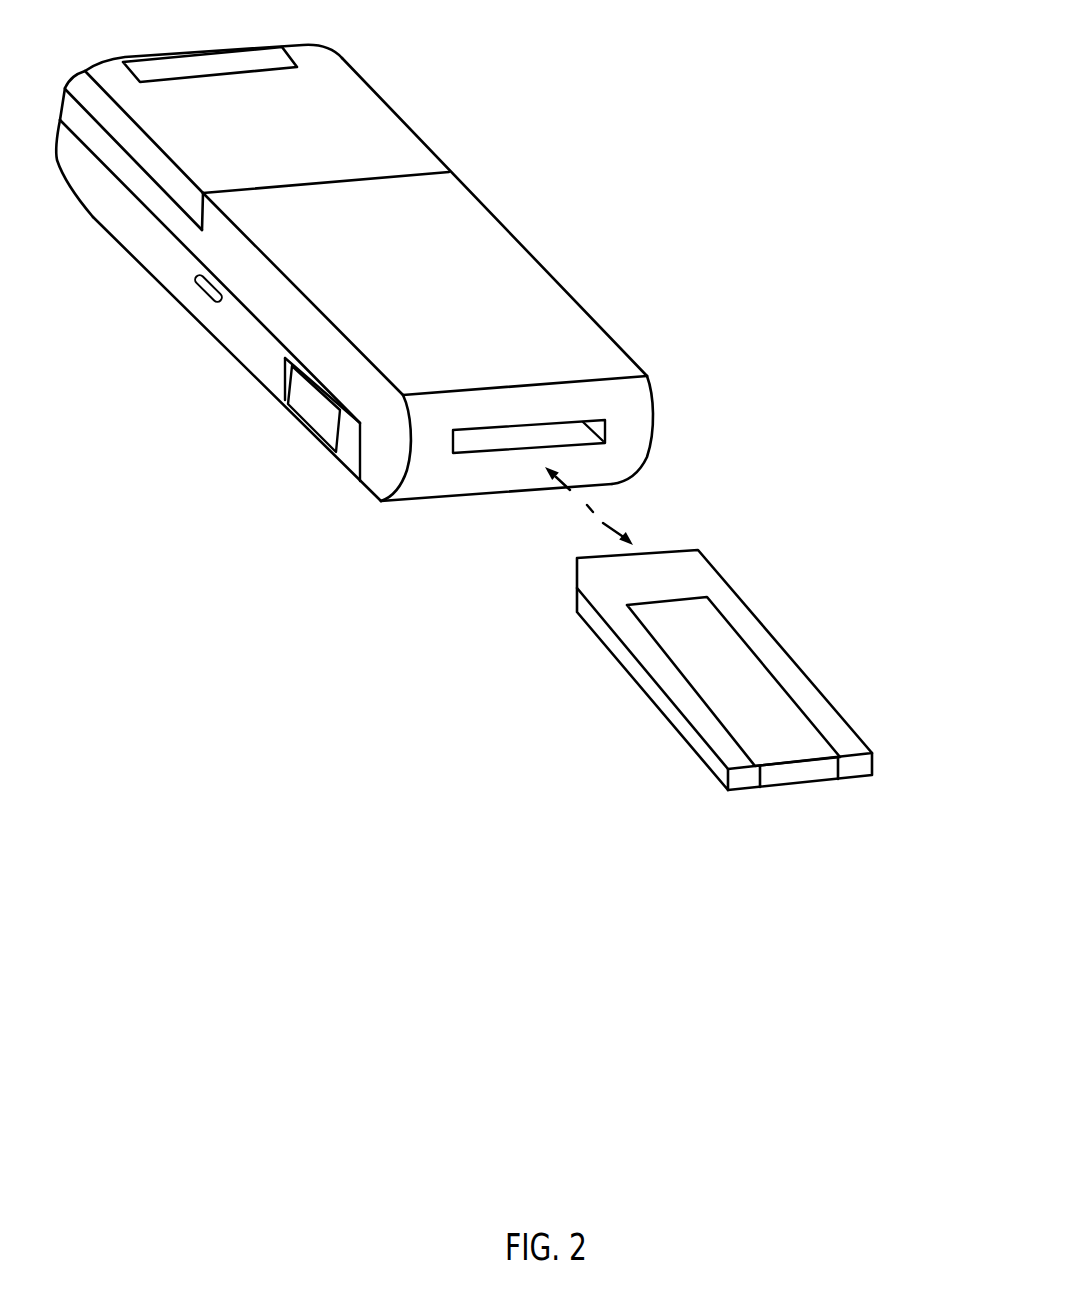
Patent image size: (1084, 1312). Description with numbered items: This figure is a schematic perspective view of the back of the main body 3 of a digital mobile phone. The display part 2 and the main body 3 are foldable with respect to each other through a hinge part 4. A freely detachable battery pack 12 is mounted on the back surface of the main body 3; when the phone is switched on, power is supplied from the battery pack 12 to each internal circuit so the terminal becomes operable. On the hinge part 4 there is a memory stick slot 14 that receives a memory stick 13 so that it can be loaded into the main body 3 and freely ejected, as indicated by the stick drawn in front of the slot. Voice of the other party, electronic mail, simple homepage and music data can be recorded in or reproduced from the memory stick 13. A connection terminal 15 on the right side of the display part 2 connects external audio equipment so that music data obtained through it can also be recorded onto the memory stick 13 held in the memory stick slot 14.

The display part 2 is at (226, 336).
The main body 3 is at (487, 227).
The hinge part 4 is at (382, 484).
The battery pack 12 is at (393, 133).
The memory stick 13 is at (749, 605).
The memory stick slot 14 is at (470, 450).
The connection terminal 15 is at (322, 418).